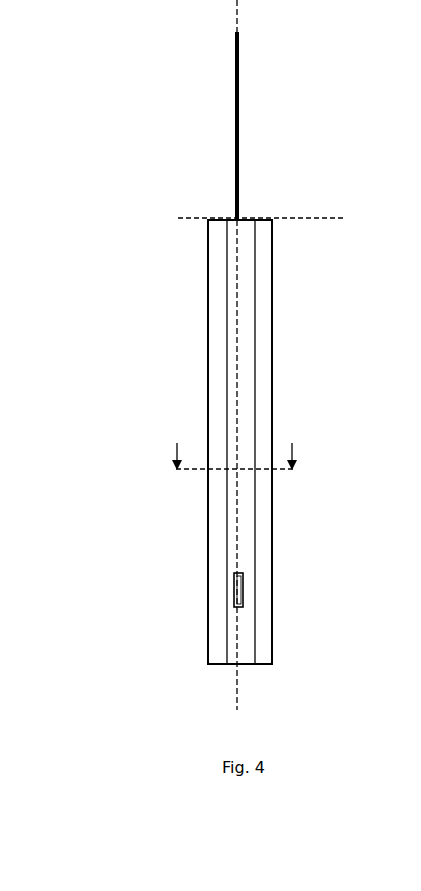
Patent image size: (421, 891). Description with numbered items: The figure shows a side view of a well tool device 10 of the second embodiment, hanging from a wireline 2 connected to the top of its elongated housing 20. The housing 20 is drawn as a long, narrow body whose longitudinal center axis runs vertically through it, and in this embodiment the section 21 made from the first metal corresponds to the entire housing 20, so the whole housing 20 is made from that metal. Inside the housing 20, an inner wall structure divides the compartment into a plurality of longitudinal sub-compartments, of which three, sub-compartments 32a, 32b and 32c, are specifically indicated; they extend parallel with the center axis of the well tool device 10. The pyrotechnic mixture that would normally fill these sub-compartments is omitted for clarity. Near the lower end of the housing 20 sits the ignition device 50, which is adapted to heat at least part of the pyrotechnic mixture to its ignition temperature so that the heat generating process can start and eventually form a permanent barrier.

The wireline 2 is at (238, 97).
The well tool device 10 is at (136, 184).
The housing 20 is at (207, 323).
The section 21 is at (198, 424).
The sub-compartment 32a is at (220, 290).
The sub-compartment 32b is at (245, 309).
The sub-compartment 32c is at (263, 327).
The ignition device 50 is at (237, 592).